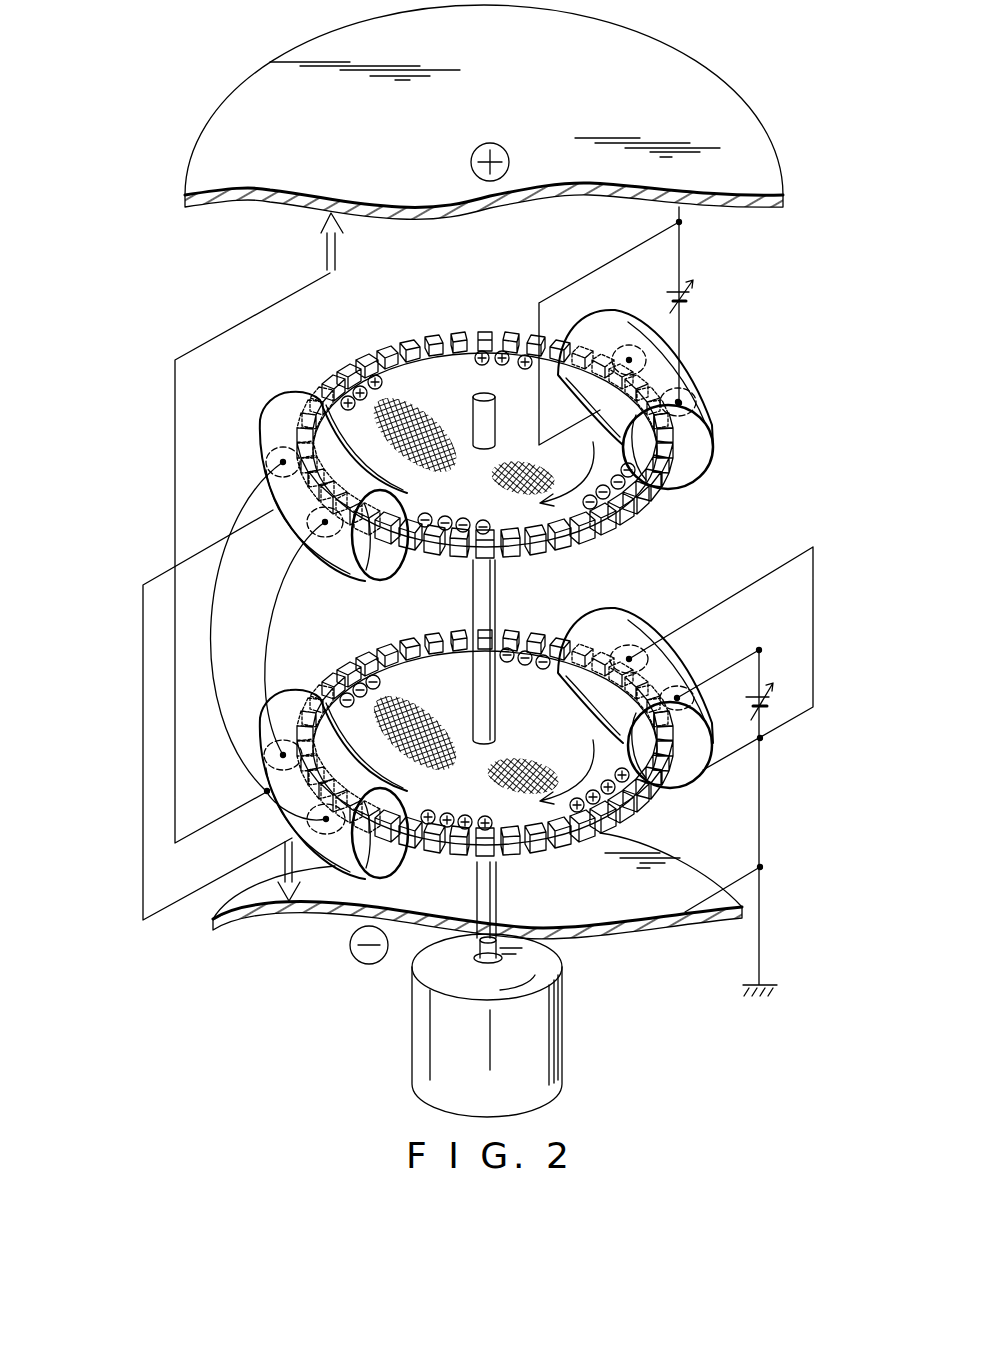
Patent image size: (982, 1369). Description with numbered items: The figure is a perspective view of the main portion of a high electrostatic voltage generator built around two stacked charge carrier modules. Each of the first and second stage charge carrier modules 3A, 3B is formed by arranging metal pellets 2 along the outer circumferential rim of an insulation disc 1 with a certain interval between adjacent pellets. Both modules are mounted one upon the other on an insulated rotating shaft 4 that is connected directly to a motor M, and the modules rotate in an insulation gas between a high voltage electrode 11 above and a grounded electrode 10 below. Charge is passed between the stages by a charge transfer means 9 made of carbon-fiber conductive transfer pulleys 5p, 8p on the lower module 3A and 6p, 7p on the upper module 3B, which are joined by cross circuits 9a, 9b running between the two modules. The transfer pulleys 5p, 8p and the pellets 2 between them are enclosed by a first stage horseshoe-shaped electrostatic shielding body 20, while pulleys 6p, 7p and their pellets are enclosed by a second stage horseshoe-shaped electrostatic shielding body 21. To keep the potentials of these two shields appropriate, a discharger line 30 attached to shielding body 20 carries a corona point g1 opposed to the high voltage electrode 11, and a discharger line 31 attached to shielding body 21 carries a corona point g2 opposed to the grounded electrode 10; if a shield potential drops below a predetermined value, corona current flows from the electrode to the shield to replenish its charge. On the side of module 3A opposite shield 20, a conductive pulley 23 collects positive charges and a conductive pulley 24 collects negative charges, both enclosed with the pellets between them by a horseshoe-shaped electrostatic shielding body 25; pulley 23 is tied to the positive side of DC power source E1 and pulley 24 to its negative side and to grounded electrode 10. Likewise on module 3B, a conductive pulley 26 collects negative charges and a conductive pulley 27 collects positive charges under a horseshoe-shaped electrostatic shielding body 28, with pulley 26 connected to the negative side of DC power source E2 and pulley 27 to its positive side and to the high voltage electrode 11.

The insulation disc 1 is at (410, 375).
The metal pellets 2 is at (458, 330).
The first stage charge carrier module 3A is at (484, 739).
The second stage charge carrier module 3B is at (488, 442).
The insulated rotating shaft 4 is at (473, 410).
The conductive transfer pulley 5p is at (334, 845).
The conductive transfer pulley 6p is at (267, 459).
The conductive transfer pulley 7p is at (327, 538).
The conductive transfer pulley 8p is at (267, 742).
The charge transfer means 9 is at (252, 641).
The cross circuit 9a is at (208, 614).
The cross circuit 9b is at (277, 577).
The grounded electrode 10 is at (604, 918).
The high voltage electrode 11 is at (733, 207).
The first stage horseshoe-shaped electrostatic shielding body 20 is at (380, 870).
The second stage horseshoe-shaped electrostatic shielding body 21 is at (368, 582).
The conductive pulley 23 is at (678, 696).
The conductive pulley 24 is at (631, 657).
The horseshoe-shaped electrostatic shielding body 25 is at (688, 785).
The conductive pulley 26 is at (697, 398).
The conductive pulley 27 is at (629, 358).
The horseshoe-shaped electrostatic shielding body 28 is at (700, 480).
The discharger line 30 is at (175, 392).
The discharger line 31 is at (143, 722).
The DC power source E1 is at (741, 822).
The DC power source E2 is at (696, 306).
The corona point g1 is at (332, 214).
The corona point g2 is at (281, 916).
The motor M is at (562, 1028).